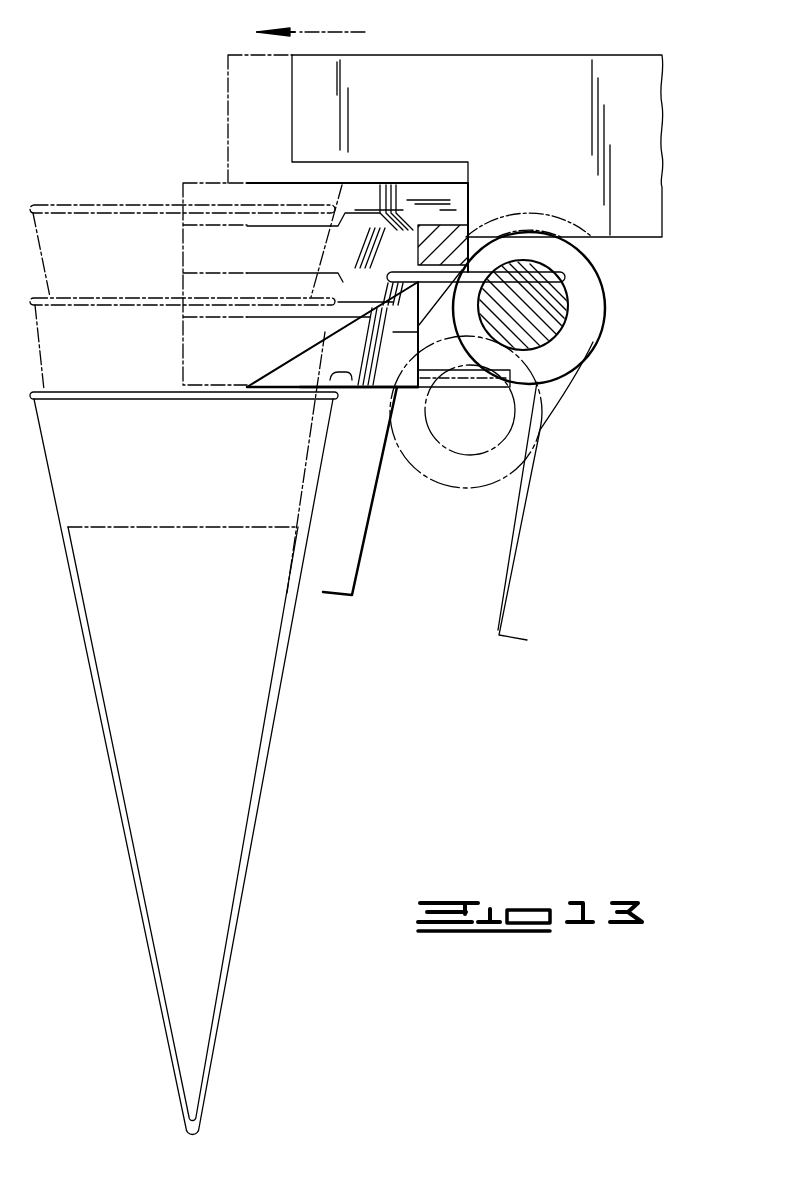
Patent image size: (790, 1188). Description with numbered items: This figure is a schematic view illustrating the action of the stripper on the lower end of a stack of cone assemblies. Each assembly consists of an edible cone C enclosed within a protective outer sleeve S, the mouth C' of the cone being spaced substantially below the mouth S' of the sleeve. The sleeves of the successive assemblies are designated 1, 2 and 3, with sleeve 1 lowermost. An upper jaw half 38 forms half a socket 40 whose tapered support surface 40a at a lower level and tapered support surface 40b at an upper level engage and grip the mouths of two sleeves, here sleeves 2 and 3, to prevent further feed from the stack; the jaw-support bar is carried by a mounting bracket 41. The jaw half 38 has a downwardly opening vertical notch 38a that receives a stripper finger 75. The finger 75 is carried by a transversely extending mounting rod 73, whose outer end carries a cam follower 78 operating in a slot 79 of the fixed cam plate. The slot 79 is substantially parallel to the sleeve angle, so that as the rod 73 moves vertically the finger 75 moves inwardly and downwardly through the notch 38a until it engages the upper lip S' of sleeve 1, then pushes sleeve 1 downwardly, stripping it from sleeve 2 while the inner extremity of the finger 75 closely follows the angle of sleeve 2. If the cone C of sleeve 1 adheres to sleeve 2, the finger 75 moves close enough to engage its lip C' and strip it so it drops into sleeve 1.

The mounting bracket 41 is at (441, 62).
The socket 40 is at (303, 197).
The tapered support surface (upper level) 40b is at (385, 232).
The tapered support surface (lower level) 40a is at (413, 348).
The stripper finger 75 is at (413, 270).
The jaw half 38 is at (305, 380).
The vertical notch 38a is at (418, 362).
The cam follower 78 is at (593, 280).
The mounting rod 73 is at (555, 312).
The slot 79 is at (505, 565).
The sleeve (third cone assembly) 3 is at (124, 270).
The sleeve (second cone assembly) 2 is at (124, 363).
The sleeve (lowermost cone assembly) 1 is at (118, 470).
The mouth of the cone C' is at (183, 817).
The mouth of the sleeve S' is at (149, 323).
The sleeve S is at (305, 636).
The cone C is at (284, 745).